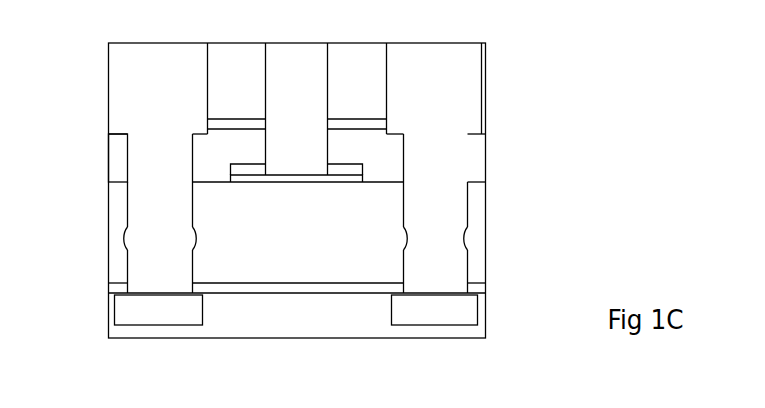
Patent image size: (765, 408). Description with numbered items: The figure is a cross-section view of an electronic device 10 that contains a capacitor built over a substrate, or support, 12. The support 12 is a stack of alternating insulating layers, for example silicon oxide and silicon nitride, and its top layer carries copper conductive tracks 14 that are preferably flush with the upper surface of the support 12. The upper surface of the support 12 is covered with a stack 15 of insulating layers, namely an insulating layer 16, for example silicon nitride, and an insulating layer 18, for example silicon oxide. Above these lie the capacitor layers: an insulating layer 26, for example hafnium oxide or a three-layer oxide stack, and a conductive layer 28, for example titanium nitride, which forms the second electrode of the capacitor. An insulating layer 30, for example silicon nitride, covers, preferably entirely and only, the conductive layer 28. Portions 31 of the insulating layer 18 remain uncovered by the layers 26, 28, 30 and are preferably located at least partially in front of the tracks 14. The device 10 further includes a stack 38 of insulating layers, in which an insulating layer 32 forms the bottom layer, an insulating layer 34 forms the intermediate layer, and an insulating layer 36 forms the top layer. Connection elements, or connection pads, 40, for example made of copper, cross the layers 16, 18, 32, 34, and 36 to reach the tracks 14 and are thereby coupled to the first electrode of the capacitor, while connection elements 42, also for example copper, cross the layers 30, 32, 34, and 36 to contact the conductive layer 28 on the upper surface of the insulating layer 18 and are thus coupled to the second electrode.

The electronic device 10 is at (522, 97).
The substrate 12 is at (498, 296).
The copper conductive tracks 14 is at (181, 317).
The stack of insulating layers 15 is at (498, 182).
The insulating layer 16 is at (117, 287).
The insulating layer 18 is at (117, 230).
The insulating layer 26 is at (305, 183).
The conductive layer 28 is at (367, 177).
The insulating layer 30 is at (348, 168).
The portions of layer 18 31 is at (218, 190).
The insulating layer 32 is at (117, 168).
The insulating layer 34 is at (218, 125).
The insulating layer 36 is at (233, 49).
The stack of insulating layers 38 is at (97, 43).
The connection elements 40 is at (134, 49).
The connection elements 42 is at (297, 49).